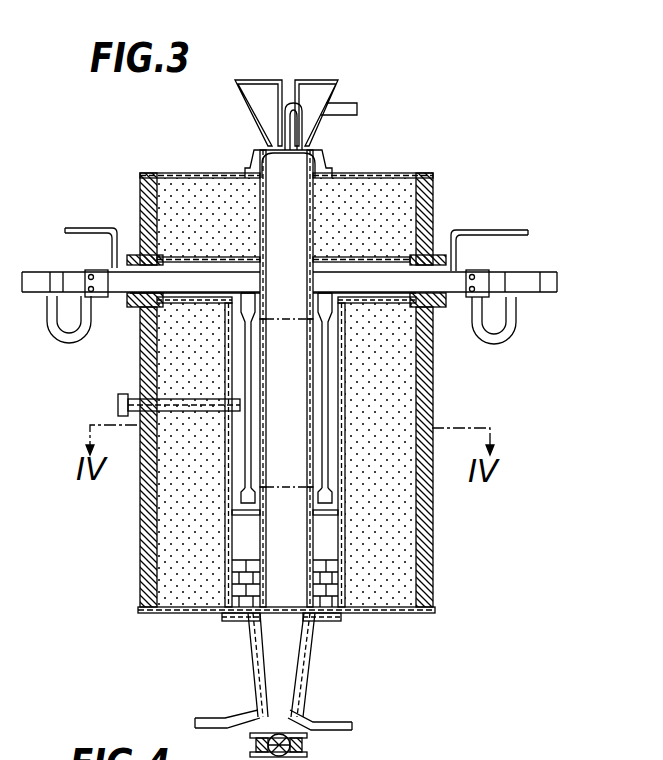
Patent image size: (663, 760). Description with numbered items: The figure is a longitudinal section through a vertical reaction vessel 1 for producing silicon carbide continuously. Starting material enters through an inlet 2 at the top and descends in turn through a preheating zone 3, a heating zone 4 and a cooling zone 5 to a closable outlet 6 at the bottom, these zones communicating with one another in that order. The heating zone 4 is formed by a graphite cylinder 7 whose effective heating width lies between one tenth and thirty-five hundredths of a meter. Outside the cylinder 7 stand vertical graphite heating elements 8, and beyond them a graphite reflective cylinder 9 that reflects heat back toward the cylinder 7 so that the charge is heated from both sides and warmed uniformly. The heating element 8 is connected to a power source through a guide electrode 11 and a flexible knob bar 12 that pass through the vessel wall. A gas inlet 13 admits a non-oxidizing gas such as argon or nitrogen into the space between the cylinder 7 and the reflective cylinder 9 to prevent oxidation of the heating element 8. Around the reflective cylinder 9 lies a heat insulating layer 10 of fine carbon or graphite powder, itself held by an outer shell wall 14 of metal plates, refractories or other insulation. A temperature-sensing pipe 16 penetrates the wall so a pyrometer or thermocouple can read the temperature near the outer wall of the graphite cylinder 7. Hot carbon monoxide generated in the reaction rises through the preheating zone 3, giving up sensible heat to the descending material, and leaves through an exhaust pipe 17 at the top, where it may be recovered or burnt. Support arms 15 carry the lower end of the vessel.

The reaction vessel 1 is at (424, 166).
The inlet 2 is at (300, 135).
The preheating zone 3 is at (294, 239).
The heating zone 4 is at (294, 414).
The cooling zone 5 is at (292, 603).
The closable outlet 6 is at (300, 745).
The graphite cylinder 7 is at (330, 397).
The graphite heating element 8 is at (333, 495).
The graphite reflective cylinder 9 is at (345, 468).
The heat insulating layer 10 is at (167, 495).
The guide electrode 11 is at (128, 282).
The flexible knob bar 12 is at (513, 308).
The gas inlet 13 is at (513, 230).
The outer shell wall 14 is at (147, 572).
The support arms 15 is at (200, 718).
The temperature-sensing pipe 16 is at (118, 409).
The exhaust pipe 17 is at (357, 108).